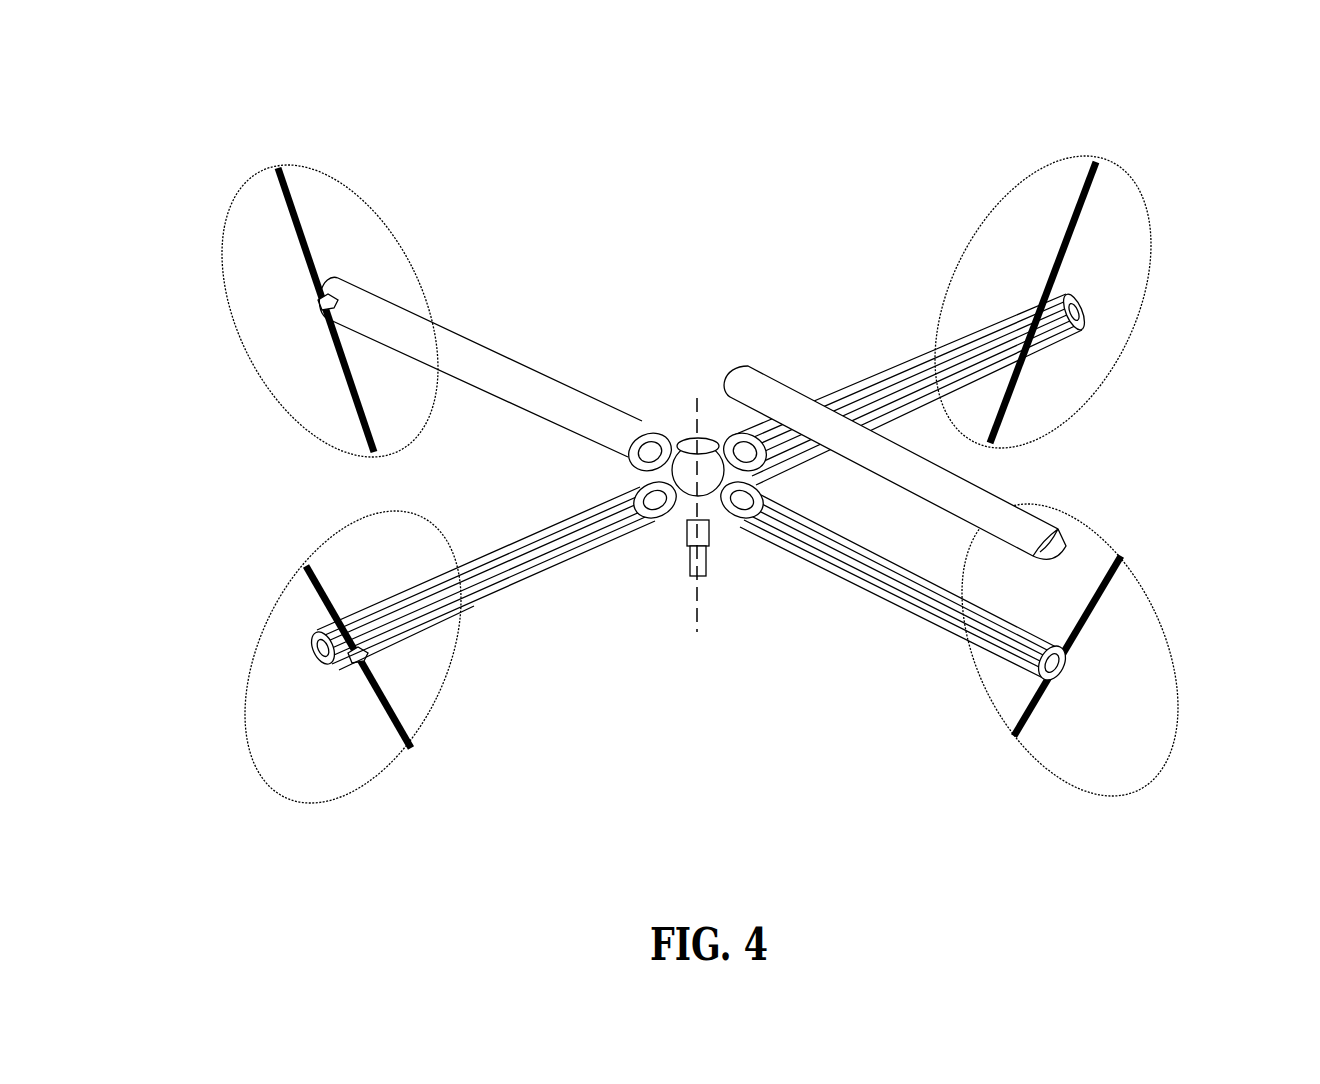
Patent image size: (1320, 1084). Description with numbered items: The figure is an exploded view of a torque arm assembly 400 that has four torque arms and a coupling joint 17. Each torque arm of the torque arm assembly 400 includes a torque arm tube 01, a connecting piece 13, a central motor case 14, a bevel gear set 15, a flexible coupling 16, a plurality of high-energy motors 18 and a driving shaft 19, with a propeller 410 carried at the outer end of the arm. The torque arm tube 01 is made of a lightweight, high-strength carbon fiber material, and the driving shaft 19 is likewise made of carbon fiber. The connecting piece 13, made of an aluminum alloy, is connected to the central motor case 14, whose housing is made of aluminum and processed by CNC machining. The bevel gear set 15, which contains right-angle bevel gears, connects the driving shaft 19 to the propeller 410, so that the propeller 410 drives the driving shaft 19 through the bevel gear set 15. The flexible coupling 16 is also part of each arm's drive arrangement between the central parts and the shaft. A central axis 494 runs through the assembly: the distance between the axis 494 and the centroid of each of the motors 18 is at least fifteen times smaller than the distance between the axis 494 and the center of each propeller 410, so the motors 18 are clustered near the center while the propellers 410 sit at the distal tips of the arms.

The torque arm assembly 400 is at (701, 436).
The torque arm tube 01 is at (453, 340).
The connecting piece 13 is at (665, 432).
The central motor case 14 is at (698, 430).
The bevel gear set 15 is at (1040, 297).
The flexible coupling 16 is at (640, 527).
The coupling joint 17 is at (693, 560).
The high-energy motors 18 is at (736, 522).
The driving shaft 19 is at (990, 627).
The propeller 410 is at (1120, 612).
The axis 494 is at (704, 642).